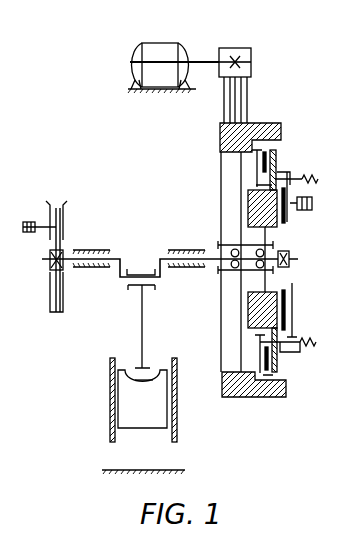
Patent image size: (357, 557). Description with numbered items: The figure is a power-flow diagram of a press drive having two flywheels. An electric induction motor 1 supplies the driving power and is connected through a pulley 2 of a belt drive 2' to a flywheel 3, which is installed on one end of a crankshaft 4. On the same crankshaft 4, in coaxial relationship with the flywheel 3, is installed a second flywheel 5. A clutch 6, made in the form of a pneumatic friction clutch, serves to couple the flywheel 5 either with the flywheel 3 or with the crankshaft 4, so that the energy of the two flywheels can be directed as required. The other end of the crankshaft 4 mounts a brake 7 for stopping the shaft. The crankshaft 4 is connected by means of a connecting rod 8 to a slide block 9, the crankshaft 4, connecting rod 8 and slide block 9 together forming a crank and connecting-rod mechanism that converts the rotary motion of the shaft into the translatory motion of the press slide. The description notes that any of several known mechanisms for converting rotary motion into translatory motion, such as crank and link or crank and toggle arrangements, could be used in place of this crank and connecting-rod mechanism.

The electric induction motor 1 is at (163, 52).
The pulley 2 is at (235, 49).
The belt drive 2' is at (249, 96).
The flywheel 3 is at (262, 125).
The crankshaft 4 is at (125, 282).
The flywheel 5 is at (280, 293).
The clutch 6 is at (278, 178).
The brake 7 is at (55, 300).
The connecting rod 8 is at (141, 318).
The slide block 9 is at (125, 402).